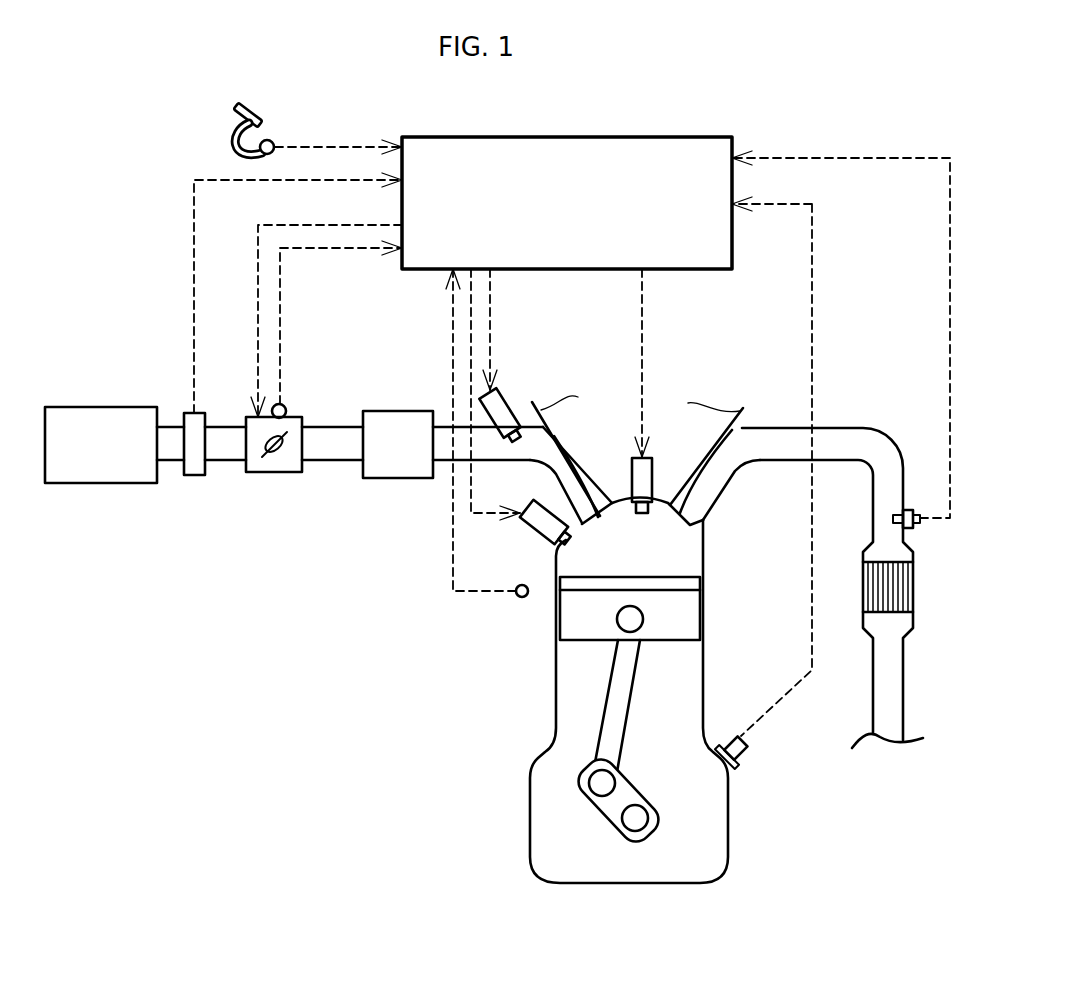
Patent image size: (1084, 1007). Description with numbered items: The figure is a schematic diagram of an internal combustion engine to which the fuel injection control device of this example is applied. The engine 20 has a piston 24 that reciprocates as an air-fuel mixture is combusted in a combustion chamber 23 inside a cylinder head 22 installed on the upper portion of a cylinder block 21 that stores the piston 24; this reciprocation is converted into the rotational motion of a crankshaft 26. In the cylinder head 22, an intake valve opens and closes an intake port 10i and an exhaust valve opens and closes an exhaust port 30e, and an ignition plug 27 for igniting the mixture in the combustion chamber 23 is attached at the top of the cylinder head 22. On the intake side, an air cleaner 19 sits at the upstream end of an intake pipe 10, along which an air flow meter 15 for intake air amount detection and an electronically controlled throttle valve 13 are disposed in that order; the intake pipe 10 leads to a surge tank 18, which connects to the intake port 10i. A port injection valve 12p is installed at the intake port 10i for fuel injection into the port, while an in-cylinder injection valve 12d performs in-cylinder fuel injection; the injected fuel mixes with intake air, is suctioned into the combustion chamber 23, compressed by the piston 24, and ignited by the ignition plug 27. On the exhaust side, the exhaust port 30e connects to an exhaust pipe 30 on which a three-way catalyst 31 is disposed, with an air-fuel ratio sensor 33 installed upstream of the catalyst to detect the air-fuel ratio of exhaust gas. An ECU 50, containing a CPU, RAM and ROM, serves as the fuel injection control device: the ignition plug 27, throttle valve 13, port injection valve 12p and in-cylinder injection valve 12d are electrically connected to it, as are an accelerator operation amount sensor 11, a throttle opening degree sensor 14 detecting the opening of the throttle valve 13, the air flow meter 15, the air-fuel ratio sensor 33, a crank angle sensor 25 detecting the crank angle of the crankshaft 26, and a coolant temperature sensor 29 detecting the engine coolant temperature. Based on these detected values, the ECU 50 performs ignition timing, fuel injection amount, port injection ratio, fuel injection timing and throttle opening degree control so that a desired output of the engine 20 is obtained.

The intake pipe 10 is at (348, 427).
The intake port 10i is at (583, 478).
The accelerator operation amount sensor 11 is at (272, 139).
The port injection valve 12p is at (507, 392).
The in-cylinder injection valve 12d is at (522, 538).
The throttle valve 13 is at (285, 473).
The throttle opening degree sensor 14 is at (285, 404).
The air flow meter 15 is at (196, 476).
The surge tank 18 is at (385, 411).
The air cleaner 19 is at (98, 407).
The engine 20 is at (584, 737).
The cylinder block 21 is at (550, 804).
The cylinder head 22 is at (705, 530).
The combustion chamber 23 is at (668, 560).
The piston 24 is at (688, 630).
The crank angle sensor 25 is at (740, 767).
The crankshaft 26 is at (630, 831).
The ignition plug 27 is at (656, 473).
The coolant temperature sensor 29 is at (522, 598).
The exhaust pipe 30 is at (838, 428).
The exhaust port 30e is at (714, 488).
The three-way catalyst 31 is at (911, 583).
The air-fuel ratio sensor 33 is at (912, 510).
The ECU 50 is at (735, 137).